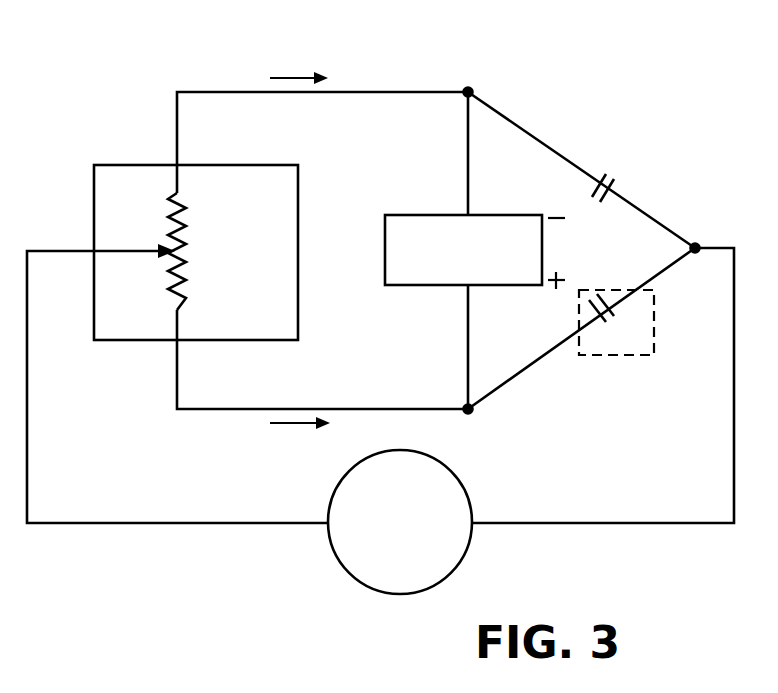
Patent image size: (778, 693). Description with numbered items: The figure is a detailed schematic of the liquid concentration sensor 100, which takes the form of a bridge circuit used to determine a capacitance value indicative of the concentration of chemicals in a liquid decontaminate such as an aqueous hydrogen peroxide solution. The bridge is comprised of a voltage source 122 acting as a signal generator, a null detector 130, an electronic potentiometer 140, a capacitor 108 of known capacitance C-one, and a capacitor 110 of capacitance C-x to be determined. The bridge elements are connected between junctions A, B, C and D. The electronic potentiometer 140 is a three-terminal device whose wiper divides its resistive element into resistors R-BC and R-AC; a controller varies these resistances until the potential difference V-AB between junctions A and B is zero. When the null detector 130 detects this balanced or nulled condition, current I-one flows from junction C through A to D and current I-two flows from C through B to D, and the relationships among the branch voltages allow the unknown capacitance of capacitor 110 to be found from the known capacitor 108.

The liquid concentration sensor 100 is at (138, 96).
The electronic potentiometer 140 is at (92, 198).
The null detector 130 is at (420, 213).
The capacitor 108 is at (615, 185).
The capacitor 110 is at (628, 357).
The voltage source 122 is at (358, 582).